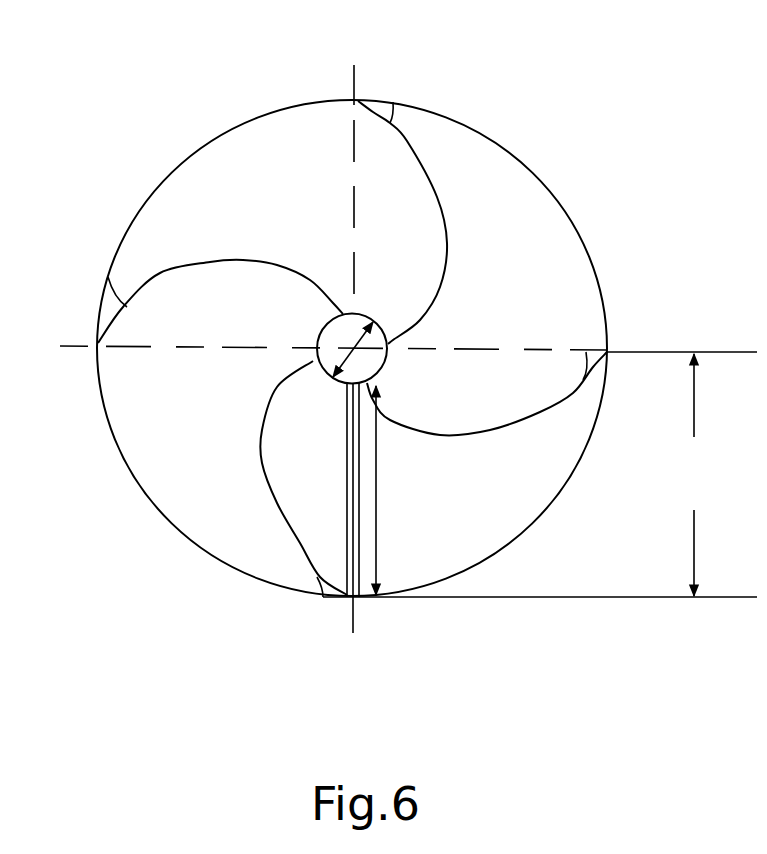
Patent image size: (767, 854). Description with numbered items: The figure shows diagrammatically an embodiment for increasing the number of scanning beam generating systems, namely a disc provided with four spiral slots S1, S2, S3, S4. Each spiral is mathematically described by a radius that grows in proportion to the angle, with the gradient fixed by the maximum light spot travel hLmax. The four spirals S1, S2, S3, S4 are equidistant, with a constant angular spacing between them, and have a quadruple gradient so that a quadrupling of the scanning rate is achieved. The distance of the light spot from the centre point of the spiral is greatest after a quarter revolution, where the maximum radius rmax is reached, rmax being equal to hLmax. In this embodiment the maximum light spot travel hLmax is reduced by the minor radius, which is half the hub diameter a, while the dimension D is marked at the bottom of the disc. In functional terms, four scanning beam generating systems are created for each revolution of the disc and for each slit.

The spiral slot S1 is at (608, 350).
The spiral slot S2 is at (393, 101).
The spiral slot S3 is at (110, 273).
The spiral slot S4 is at (307, 600).
The blade thickness D is at (403, 598).
The minor diameter a is at (352, 349).
The maximum light spot travel hLmax is at (404, 490).
The maximum radius rmax is at (540, 474).